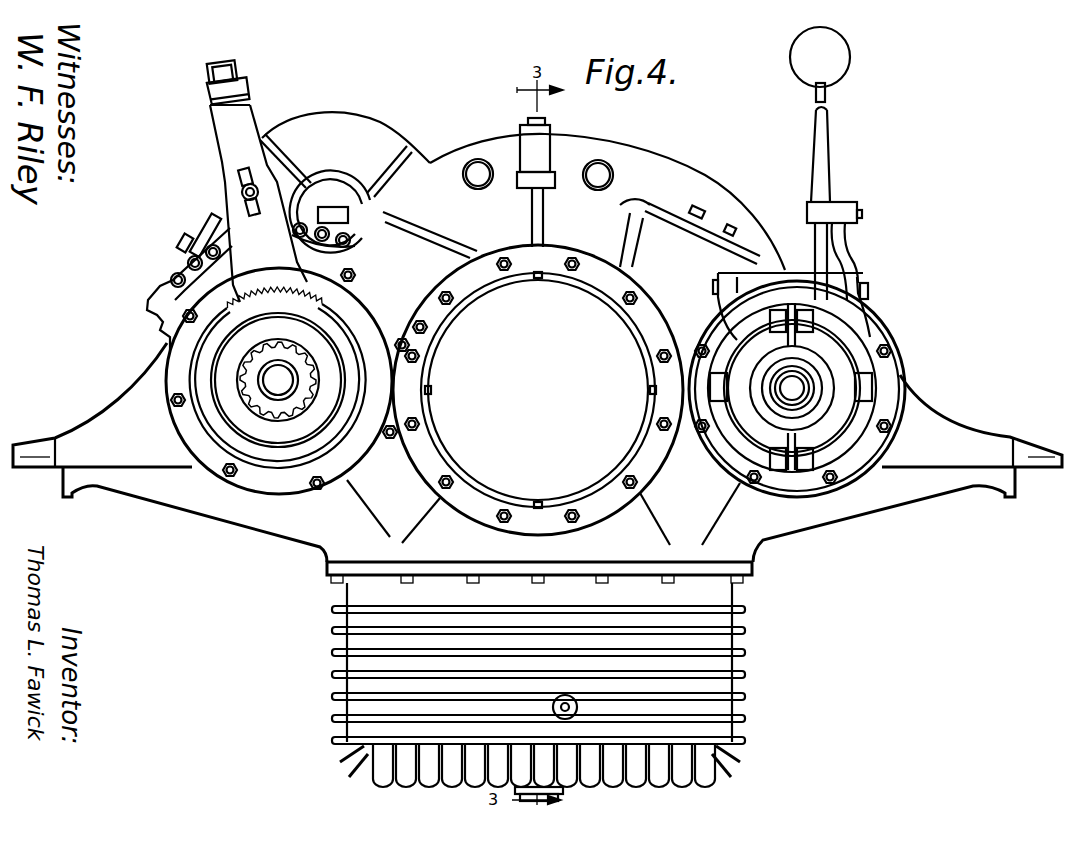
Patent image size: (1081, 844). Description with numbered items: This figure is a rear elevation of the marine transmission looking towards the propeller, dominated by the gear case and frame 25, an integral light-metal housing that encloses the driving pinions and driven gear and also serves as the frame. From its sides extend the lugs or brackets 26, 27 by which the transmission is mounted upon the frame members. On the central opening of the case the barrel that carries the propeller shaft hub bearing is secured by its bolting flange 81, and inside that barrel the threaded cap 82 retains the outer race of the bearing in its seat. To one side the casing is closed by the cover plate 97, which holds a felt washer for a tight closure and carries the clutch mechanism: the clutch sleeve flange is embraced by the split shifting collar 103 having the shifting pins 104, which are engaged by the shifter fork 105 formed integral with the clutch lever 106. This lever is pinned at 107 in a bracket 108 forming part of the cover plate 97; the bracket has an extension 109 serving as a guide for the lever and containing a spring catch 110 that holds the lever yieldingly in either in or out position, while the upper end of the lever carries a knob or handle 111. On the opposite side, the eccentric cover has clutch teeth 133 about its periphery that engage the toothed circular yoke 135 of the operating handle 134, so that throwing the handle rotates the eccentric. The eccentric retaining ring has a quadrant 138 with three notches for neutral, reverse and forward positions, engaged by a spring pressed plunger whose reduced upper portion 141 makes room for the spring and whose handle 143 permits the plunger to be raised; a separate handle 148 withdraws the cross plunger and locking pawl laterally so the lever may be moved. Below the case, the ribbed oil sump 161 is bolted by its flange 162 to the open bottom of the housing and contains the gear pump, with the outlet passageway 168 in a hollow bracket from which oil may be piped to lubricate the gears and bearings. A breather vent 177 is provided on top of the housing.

The gear case and frame 25 is at (596, 212).
The extending lug or bracket 26 is at (955, 412).
The extending lug or bracket 27 is at (102, 420).
The bolting flange 81 is at (612, 282).
The threaded cap 82 is at (560, 305).
The cover plate 97 is at (855, 370).
The shifting collar 103 is at (828, 420).
The shifting pins 104 is at (872, 384).
The shifter fork 105 is at (848, 327).
The clutch lever 106 is at (826, 140).
The pin 107 is at (868, 292).
The bracket 108 is at (716, 290).
The extension 109 is at (858, 240).
The spring catch 110 is at (862, 212).
The knob or handle 111 is at (840, 62).
The clutch teeth 133 is at (270, 292).
The operating handle 134 is at (214, 128).
The circular yoke 135 is at (196, 348).
The quadrant 138 is at (183, 240).
The upper portion of plunger 141 is at (246, 96).
The handle 143 is at (240, 76).
The handle 148 is at (240, 180).
The ribbed cup or casing 161 is at (746, 642).
The flange 162 is at (754, 572).
The outlet passageway 168 is at (572, 717).
The breather vent 177 is at (540, 146).